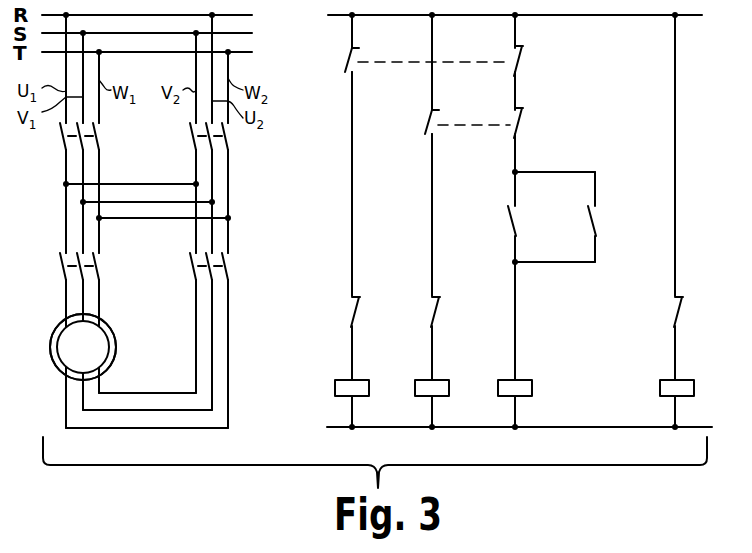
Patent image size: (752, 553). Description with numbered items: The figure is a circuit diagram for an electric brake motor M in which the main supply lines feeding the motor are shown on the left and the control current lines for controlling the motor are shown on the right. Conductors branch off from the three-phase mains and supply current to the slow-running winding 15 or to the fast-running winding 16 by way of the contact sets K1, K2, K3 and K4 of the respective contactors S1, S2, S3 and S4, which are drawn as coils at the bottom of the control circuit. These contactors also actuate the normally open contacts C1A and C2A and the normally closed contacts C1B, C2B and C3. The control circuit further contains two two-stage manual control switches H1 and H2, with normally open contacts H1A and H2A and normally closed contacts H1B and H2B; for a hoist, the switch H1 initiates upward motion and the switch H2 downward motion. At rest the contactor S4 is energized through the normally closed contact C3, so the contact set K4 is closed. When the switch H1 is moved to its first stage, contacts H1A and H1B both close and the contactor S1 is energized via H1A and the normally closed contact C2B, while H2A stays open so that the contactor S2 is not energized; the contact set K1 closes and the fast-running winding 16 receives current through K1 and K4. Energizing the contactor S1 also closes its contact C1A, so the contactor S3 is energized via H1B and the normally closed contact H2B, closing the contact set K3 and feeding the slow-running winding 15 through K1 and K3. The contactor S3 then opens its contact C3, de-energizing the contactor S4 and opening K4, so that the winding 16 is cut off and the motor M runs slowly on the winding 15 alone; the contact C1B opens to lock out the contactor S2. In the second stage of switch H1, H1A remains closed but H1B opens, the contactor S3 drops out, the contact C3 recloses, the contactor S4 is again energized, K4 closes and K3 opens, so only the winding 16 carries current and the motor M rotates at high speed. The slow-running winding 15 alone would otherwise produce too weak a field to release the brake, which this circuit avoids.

The slow-running winding 15 is at (110, 349).
The fast-running winding 16 is at (54, 327).
The electric brake motor M is at (117, 327).
The contact set K1 is at (60, 140).
The contact set K2 is at (191, 140).
The contact set K3 is at (60, 263).
The contact set K4 is at (190, 263).
The manual control switch H1 is at (345, 63).
The normally open contact H1A is at (350, 75).
The normally closed contact H1B is at (519, 74).
The manual control switch H2 is at (426, 125).
The normally open contact H2A is at (428, 135).
The normally closed contact H2B is at (519, 132).
The normally open contact C1A is at (508, 212).
The normally closed contact C1B is at (430, 309).
The normally open contact C2A is at (588, 219).
The normally closed contact C2B is at (350, 302).
The normally closed contact C3 is at (674, 308).
The contactor S1 is at (335, 390).
The contactor S2 is at (415, 390).
The contactor S3 is at (498, 390).
The contactor S4 is at (660, 390).